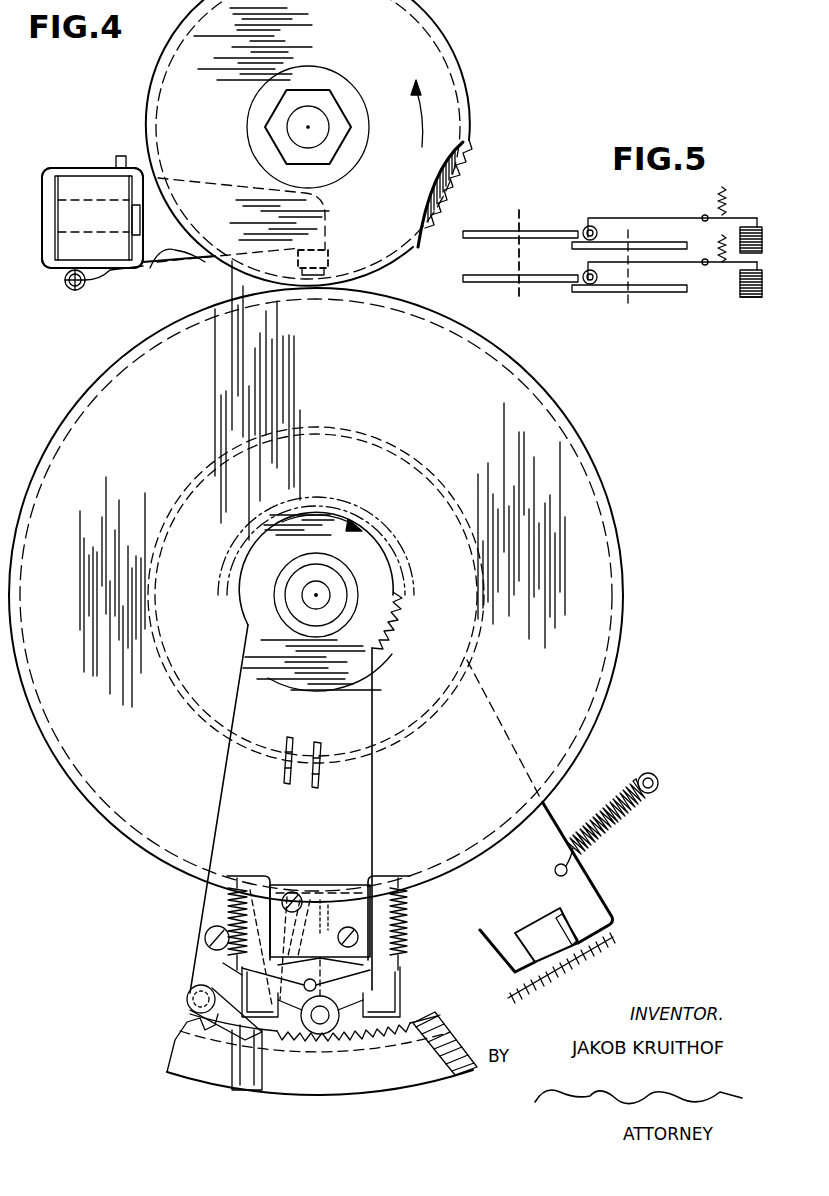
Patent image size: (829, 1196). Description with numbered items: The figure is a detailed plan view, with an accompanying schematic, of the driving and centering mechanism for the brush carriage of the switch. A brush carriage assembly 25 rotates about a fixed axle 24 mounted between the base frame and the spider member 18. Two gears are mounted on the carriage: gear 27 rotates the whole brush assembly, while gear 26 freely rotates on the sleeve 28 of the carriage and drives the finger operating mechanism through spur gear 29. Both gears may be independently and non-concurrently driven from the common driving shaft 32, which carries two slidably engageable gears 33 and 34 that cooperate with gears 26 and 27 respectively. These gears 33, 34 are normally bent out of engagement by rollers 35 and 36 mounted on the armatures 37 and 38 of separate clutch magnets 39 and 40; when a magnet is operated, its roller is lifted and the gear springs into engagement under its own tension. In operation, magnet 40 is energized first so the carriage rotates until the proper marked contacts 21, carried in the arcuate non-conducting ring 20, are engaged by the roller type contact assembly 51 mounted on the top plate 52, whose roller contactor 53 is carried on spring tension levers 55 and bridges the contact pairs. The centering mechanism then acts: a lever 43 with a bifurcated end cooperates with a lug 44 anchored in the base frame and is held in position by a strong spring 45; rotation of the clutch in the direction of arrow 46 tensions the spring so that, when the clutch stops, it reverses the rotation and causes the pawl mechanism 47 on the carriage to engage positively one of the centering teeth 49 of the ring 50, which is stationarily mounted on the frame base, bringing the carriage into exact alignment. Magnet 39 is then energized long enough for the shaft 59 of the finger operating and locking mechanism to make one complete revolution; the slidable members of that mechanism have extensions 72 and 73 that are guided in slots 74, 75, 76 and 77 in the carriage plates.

In FIG. 4, the spider member 18 is at (336, 1082).
In FIG. 4, the ring 20 is at (460, 1055).
In FIG. 4, the contacts or segments 21 is at (392, 1032).
In FIG. 4, the fixed axle 24 is at (317, 590).
In FIG. 5, the fixed axle 24 is at (518, 258).
In FIG. 4, the brush carriage assembly 25 is at (215, 812).
In FIG. 4, the gear 26 is at (545, 412).
In FIG. 5, the gear 26 is at (491, 231).
In FIG. 5, the gear 27 is at (481, 283).
In FIG. 4, the sleeve 28 is at (411, 462).
In FIG. 4, the spur gear 29 is at (405, 612).
In FIG. 4, the common driving shaft 32 is at (318, 117).
In FIG. 5, the common driving shaft 32 is at (628, 273).
In FIG. 4, the slidably engageable gear 33 is at (446, 34).
In FIG. 5, the slidably engageable gear 33 is at (575, 250).
In FIG. 4, the slidably engageable gear 34 is at (456, 180).
In FIG. 5, the slidably engageable gear 34 is at (581, 291).
In FIG. 4, the roller 35 is at (330, 250).
In FIG. 5, the roller 35 is at (585, 228).
In FIG. 4, the roller 36 is at (313, 259).
In FIG. 5, the roller 36 is at (605, 293).
In FIG. 4, the armature 37 is at (224, 187).
In FIG. 5, the armature 37 is at (613, 220).
In FIG. 4, the armature 38 is at (174, 260).
In FIG. 5, the armature 38 is at (640, 262).
In FIG. 4, the clutch magnet 39 is at (76, 190).
In FIG. 5, the clutch magnet 39 is at (745, 228).
In FIG. 4, the clutch magnet 40 is at (92, 218).
In FIG. 5, the clutch magnet 40 is at (748, 297).
In FIG. 4, the lever 43 is at (492, 720).
In FIG. 4, the lug 44 is at (520, 935).
In FIG. 4, the strong spring 45 is at (585, 840).
In FIG. 4, the arrow 46 is at (470, 365).
In FIG. 4, the pawl mechanism 47 is at (180, 1003).
In FIG. 4, the centering teeth 49 is at (242, 1035).
In FIG. 4, the ring 50 is at (180, 1057).
In FIG. 4, the roller type contact assembly 51 is at (325, 883).
In FIG. 4, the top plate 52 is at (314, 820).
In FIG. 4, the roller type contactor 53 is at (320, 997).
In FIG. 4, the spring tension levers 55 is at (314, 980).
In FIG. 4, the shaft 59 is at (283, 885).
In FIG. 4, the extension 72 is at (287, 747).
In FIG. 4, the extension 73 is at (319, 752).
In FIG. 4, the slot 74 is at (223, 962).
In FIG. 4, the slot 75 is at (284, 777).
In FIG. 4, the slot 76 is at (285, 960).
In FIG. 4, the slot 77 is at (318, 784).